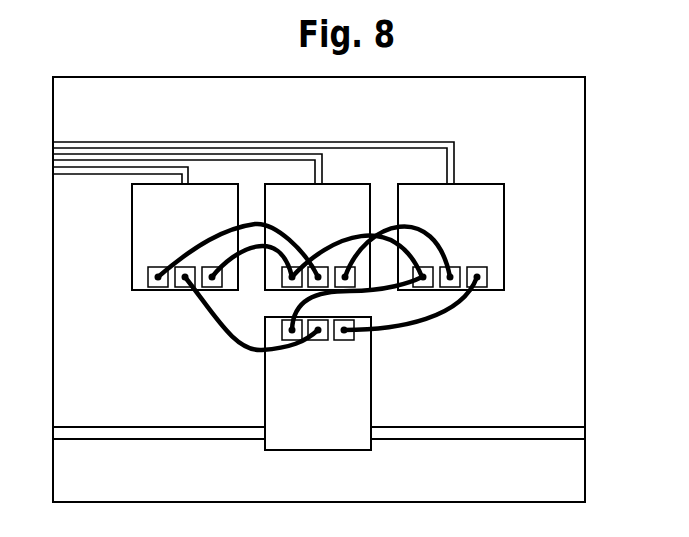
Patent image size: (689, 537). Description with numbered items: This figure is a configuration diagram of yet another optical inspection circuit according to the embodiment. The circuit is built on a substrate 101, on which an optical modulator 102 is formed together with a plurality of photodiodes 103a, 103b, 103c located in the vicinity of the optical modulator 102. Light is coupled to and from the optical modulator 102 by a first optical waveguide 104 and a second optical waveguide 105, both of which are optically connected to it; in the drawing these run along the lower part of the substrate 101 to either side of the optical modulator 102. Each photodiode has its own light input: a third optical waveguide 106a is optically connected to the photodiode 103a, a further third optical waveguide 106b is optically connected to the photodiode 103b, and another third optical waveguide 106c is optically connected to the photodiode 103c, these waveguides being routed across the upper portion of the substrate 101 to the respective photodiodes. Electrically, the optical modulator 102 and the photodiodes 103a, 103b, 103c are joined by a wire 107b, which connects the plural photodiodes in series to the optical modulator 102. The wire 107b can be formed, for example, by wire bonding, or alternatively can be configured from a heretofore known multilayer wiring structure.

The substrate 101 is at (585, 163).
The optical modulator 102 is at (318, 450).
The photodiode 103a is at (132, 237).
The photodiode 103b is at (360, 204).
The photodiode 103c is at (504, 247).
The first optical waveguide 104 is at (195, 440).
The second optical waveguide 105 is at (458, 440).
The third optical waveguide 106a is at (88, 167).
The third optical waveguide 106b is at (155, 159).
The third optical waveguide 106c is at (220, 142).
The wire 107b is at (480, 312).